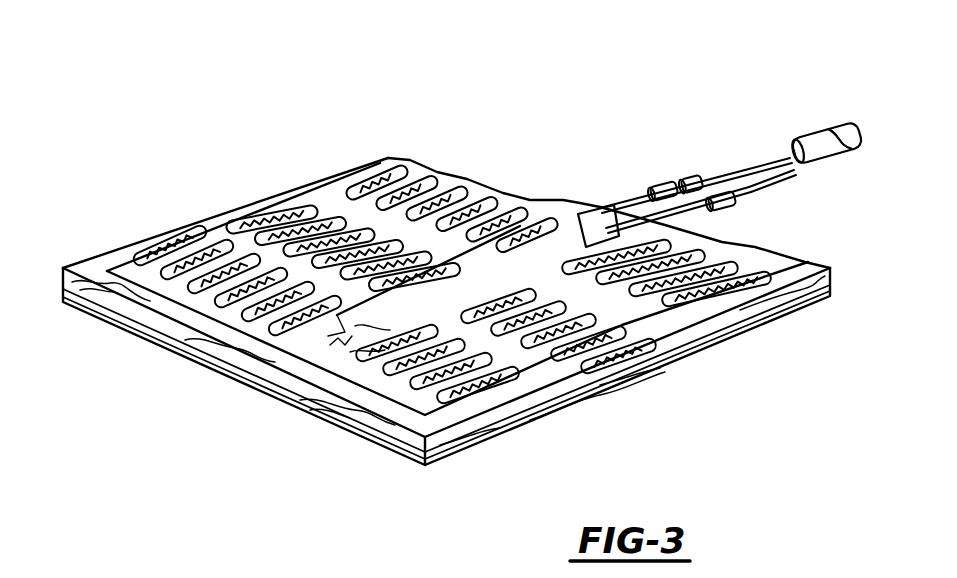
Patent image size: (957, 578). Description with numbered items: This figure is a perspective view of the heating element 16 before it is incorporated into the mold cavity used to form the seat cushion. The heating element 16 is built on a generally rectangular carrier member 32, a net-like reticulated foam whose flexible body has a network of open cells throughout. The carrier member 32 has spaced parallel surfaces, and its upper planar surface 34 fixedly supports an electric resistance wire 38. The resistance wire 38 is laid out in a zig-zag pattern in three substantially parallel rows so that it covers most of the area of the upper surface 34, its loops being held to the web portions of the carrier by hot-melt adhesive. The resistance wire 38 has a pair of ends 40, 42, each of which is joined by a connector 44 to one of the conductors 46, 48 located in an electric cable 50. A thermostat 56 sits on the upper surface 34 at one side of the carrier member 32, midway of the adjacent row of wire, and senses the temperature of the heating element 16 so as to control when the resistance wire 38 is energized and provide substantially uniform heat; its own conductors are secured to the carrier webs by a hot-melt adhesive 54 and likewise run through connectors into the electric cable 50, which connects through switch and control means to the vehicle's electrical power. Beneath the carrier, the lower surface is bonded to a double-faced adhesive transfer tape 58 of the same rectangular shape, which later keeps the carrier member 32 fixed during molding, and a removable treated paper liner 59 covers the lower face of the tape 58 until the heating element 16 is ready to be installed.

The heating element 16 is at (252, 176).
The carrier member 32 is at (213, 210).
The upper planar surface 34 is at (311, 190).
The electric resistance wire 38 is at (703, 335).
The end of resistance wire 40 is at (680, 238).
The end of resistance wire 42 is at (600, 210).
The connector 44 is at (677, 180).
The conductor 46 is at (768, 174).
The conductor 48 is at (740, 160).
The electric cable 50 is at (813, 135).
The hot-melt adhesive 54 is at (157, 257).
The thermostat 56 is at (580, 213).
The double-faced adhesive transfer tape 58 is at (350, 448).
The paper liner 59 is at (262, 387).